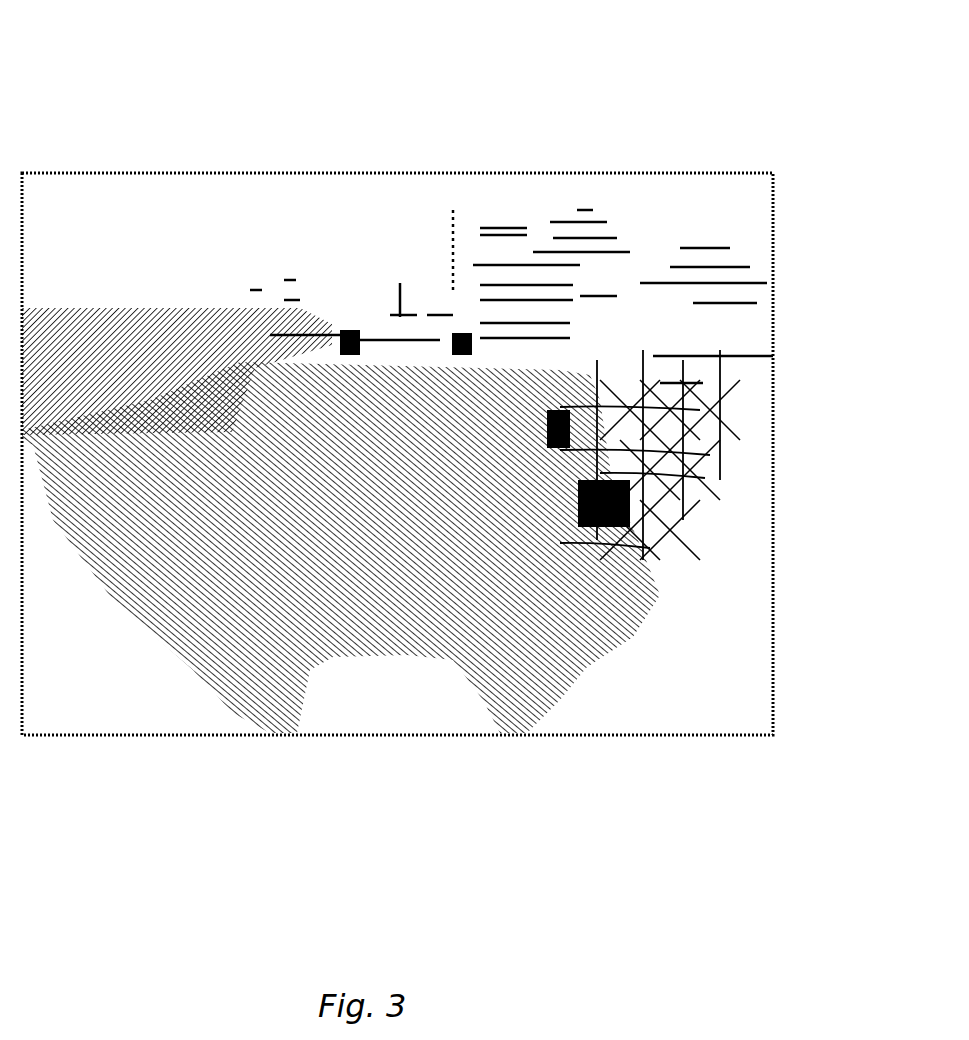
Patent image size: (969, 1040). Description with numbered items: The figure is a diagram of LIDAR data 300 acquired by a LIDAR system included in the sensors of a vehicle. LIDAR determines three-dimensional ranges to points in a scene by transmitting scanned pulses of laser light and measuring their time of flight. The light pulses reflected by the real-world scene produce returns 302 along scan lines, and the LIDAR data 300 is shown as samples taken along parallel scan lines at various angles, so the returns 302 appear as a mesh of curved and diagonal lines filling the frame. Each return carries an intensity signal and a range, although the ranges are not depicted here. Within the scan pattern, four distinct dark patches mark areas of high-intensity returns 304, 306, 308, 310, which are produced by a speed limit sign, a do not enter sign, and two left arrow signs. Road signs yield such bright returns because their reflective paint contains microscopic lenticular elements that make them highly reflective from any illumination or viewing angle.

The LIDAR data 300 is at (401, 39).
The returns 302 is at (432, 792).
The high-intensity return area 304 is at (630, 495).
The high-intensity return area 306 is at (570, 422).
The high-intensity return area 308 is at (460, 333).
The high-intensity return area 310 is at (349, 330).